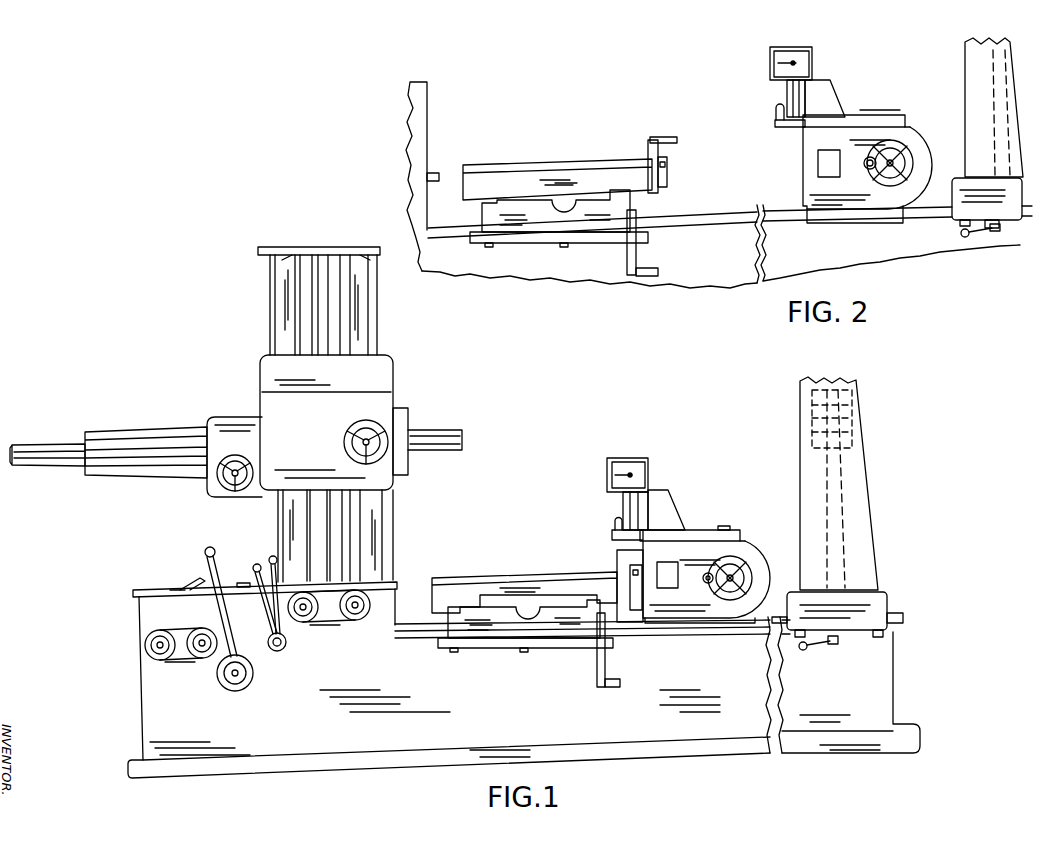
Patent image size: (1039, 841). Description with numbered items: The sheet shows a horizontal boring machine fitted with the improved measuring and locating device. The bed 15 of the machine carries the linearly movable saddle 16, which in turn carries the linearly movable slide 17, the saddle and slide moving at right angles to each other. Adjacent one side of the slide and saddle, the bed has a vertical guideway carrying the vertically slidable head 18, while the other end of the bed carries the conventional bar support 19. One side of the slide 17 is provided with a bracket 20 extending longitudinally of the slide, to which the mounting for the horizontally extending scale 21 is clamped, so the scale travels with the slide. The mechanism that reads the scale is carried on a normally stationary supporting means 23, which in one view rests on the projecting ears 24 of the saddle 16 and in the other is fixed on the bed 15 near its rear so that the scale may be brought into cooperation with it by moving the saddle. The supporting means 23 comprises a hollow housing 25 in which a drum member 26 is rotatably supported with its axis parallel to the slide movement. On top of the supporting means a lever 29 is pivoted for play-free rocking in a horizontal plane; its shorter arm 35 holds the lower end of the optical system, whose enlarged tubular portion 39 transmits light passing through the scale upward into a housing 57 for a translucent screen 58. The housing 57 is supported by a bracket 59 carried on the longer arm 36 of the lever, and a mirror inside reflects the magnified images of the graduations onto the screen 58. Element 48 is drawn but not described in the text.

In FIG. 2, the bed 15 is at (702, 285).
In FIG. 1, the bed 15 is at (908, 678).
In FIG. 2, the saddle 16 is at (550, 232).
In FIG. 1, the saddle 16 is at (516, 642).
In FIG. 2, the slide 17 is at (570, 177).
In FIG. 1, the slide 17 is at (505, 583).
In FIG. 1, the head 18 is at (257, 390).
In FIG. 2, the bar support 19 is at (965, 76).
In FIG. 1, the bar support 19 is at (860, 488).
In FIG. 2, the bracket 20 is at (667, 165).
In FIG. 1, the bracket 20 is at (645, 597).
In FIG. 2, the scale 21 is at (680, 120).
In FIG. 2, the supporting means 23 is at (857, 153).
In FIG. 1, the supporting means 23 is at (717, 579).
In FIG. 2, the projecting ears 24 is at (642, 243).
In FIG. 1, the projecting ears 24 is at (612, 641).
In FIG. 2, the housing 25 is at (923, 140).
In FIG. 1, the housing 25 is at (757, 557).
In FIG. 2, the drum member 26 is at (910, 127).
In FIG. 1, the drum member 26 is at (746, 541).
In FIG. 2, the lever 29 is at (862, 108).
In FIG. 1, the lever 29 is at (703, 530).
In FIG. 2, the arm 35 is at (782, 127).
In FIG. 2, the arm 36 is at (883, 112).
In FIG. 1, the arm 36 is at (724, 528).
In FIG. 2, the enlarged tubular portion 39 is at (787, 90).
In FIG. 1, the enlarged tubular portion 39 is at (623, 502).
In FIG. 2, the post 48 is at (776, 110).
In FIG. 1, the post 48 is at (615, 525).
In FIG. 2, the housing 57 is at (793, 63).
In FIG. 1, the housing 57 is at (636, 472).
In FIG. 2, the screen 58 is at (806, 56).
In FIG. 1, the screen 58 is at (643, 468).
In FIG. 2, the bracket 59 is at (837, 95).
In FIG. 1, the bracket 59 is at (675, 505).